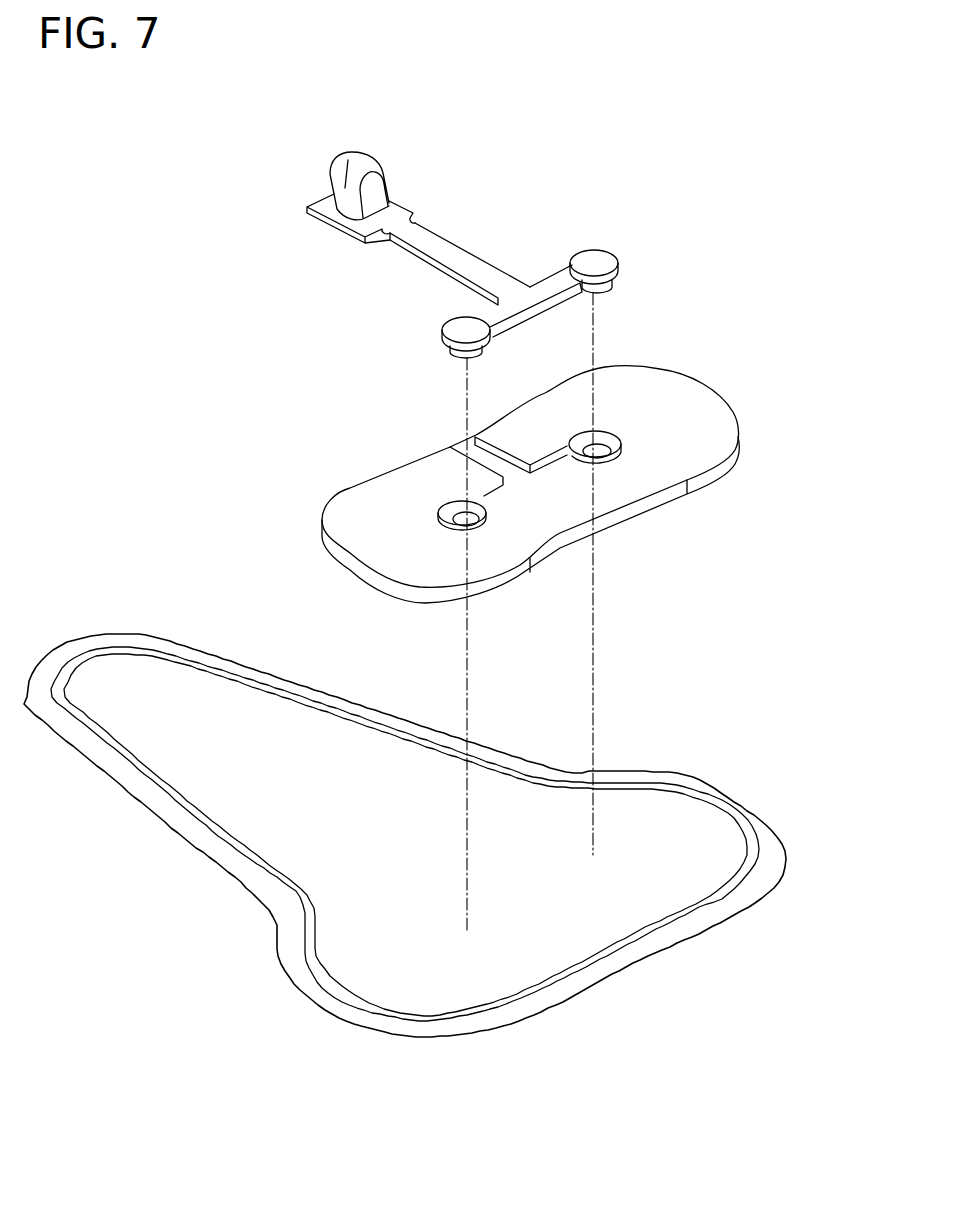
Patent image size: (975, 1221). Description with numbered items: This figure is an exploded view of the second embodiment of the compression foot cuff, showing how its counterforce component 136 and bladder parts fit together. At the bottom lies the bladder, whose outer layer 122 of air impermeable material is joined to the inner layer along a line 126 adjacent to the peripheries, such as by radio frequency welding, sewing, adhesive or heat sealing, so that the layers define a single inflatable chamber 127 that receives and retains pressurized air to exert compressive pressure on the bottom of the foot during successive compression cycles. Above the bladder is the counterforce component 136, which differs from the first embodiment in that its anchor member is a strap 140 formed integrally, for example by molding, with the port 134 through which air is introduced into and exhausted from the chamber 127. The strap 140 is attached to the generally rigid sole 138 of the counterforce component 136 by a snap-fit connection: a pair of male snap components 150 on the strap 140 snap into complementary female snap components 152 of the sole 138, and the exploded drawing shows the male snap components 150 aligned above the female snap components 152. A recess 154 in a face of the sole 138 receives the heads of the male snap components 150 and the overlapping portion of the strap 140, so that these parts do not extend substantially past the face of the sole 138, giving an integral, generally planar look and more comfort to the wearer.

The outer layer 122 is at (568, 986).
The line 126 is at (208, 667).
The inflatable chamber 127 is at (118, 690).
The port 134 is at (350, 163).
The counterforce component 136 is at (695, 362).
The sole 138 is at (708, 484).
The strap 140 is at (463, 250).
The male snap components 150 is at (457, 358).
The female snap components 152 is at (448, 507).
The recess 154 is at (521, 484).